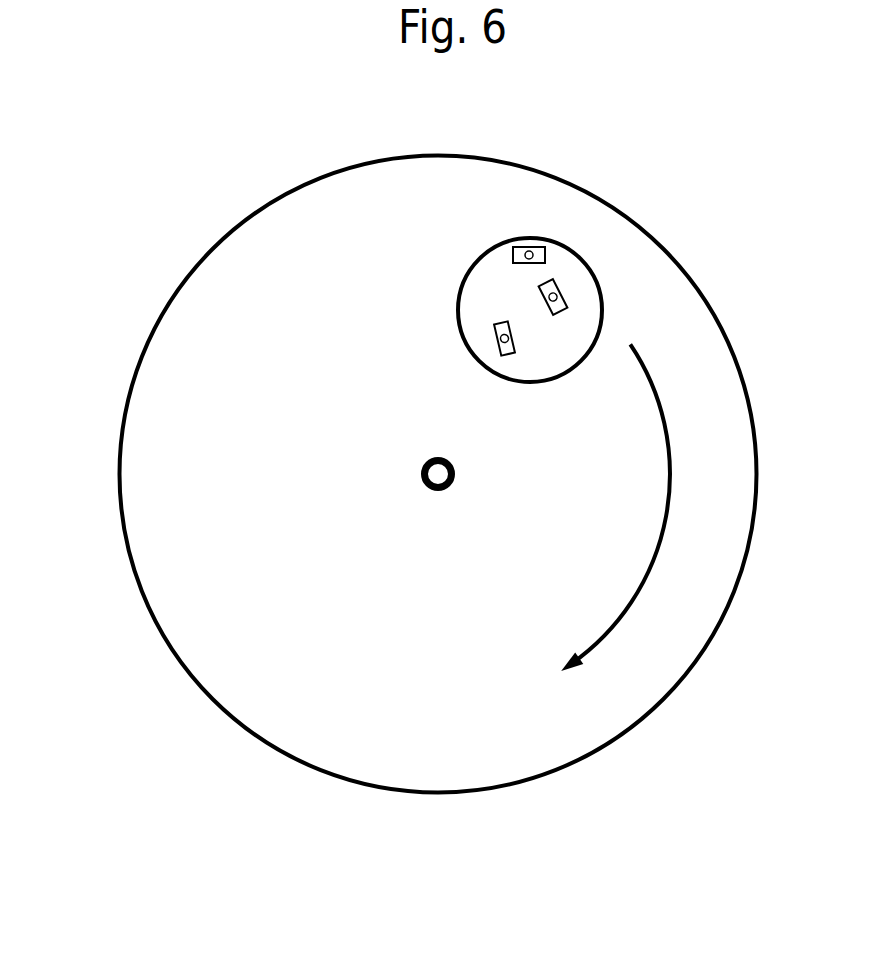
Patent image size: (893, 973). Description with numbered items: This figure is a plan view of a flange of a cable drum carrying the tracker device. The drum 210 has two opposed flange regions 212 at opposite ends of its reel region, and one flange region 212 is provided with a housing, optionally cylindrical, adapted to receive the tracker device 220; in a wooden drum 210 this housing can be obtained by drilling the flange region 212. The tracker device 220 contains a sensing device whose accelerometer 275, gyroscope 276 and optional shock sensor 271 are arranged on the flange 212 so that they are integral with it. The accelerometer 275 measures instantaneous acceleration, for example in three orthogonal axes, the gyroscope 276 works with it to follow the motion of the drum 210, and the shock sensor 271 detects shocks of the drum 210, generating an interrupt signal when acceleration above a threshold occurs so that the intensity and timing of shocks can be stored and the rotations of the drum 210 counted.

The drum 210 is at (269, 156).
The flange region 212 is at (172, 544).
The tracker device 220 is at (622, 302).
The shock sensor 271 is at (497, 337).
The accelerometer 275 is at (522, 246).
The gyroscope 276 is at (556, 281).